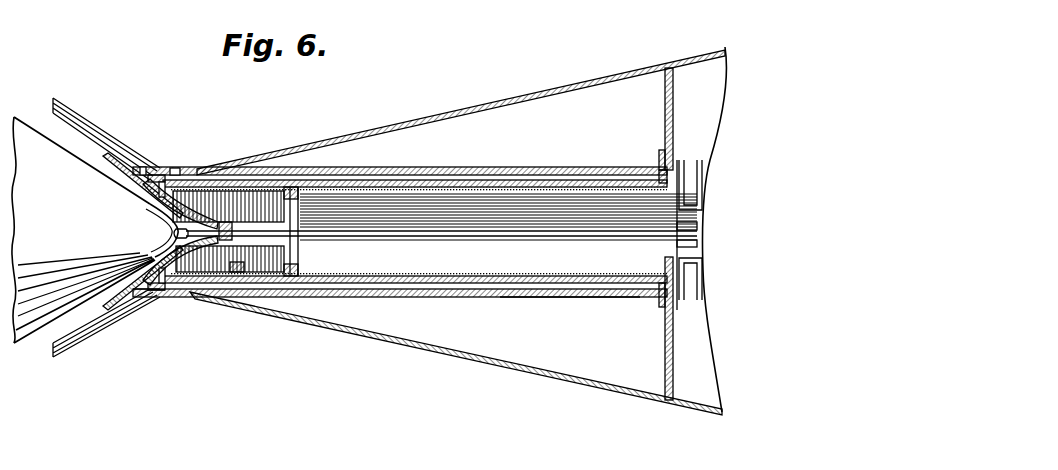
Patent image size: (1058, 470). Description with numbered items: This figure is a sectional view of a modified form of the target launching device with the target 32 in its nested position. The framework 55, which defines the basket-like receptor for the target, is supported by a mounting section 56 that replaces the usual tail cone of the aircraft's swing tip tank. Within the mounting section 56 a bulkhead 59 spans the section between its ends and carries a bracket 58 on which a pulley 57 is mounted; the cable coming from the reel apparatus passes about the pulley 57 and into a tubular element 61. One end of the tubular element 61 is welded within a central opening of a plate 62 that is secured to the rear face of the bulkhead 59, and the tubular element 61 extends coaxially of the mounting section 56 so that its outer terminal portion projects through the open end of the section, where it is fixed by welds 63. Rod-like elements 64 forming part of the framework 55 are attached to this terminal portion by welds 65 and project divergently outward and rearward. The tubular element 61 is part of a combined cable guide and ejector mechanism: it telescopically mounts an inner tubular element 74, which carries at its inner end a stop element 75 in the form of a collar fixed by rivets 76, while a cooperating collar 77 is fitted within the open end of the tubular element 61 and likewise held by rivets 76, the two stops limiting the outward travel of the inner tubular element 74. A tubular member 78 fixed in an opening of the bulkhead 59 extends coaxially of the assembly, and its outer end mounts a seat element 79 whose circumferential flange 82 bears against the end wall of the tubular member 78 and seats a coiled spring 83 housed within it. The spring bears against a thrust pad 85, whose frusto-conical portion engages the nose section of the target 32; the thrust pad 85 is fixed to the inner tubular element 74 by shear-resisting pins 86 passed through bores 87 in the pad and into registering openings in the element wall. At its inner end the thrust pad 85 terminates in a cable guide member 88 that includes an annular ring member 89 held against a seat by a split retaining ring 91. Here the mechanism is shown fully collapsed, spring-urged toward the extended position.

The target 32 is at (28, 346).
The framework 55 is at (123, 132).
The mounting section 56 is at (490, 99).
The pulley 57 is at (700, 229).
The bracket 58 is at (696, 211).
The bulkhead 59 is at (676, 124).
The tubular element 61 is at (566, 298).
The plate 62 is at (662, 150).
The welds 63 is at (192, 300).
The rod-like elements 64 is at (88, 118).
The welds 65 is at (137, 298).
The inner tubular element 74 is at (160, 170).
The stop element 75 is at (642, 298).
The rivets 76 is at (172, 172).
The collar 77 is at (181, 172).
The tubular member 78 is at (487, 276).
The seat element 79 is at (300, 267).
The flange 82 is at (280, 291).
The coiled spring 83 is at (285, 181).
The thrust pad 85 is at (172, 217).
The shear-resisting pins 86 is at (158, 190).
The bores 87 is at (172, 213).
The cable guide member 88 is at (215, 275).
The annular ring member 89 is at (230, 196).
The split retaining ring 91 is at (240, 276).